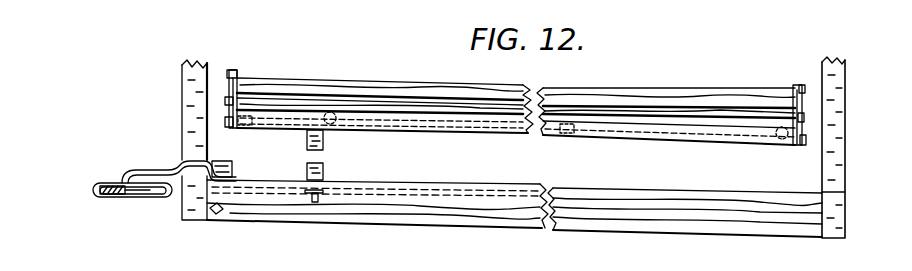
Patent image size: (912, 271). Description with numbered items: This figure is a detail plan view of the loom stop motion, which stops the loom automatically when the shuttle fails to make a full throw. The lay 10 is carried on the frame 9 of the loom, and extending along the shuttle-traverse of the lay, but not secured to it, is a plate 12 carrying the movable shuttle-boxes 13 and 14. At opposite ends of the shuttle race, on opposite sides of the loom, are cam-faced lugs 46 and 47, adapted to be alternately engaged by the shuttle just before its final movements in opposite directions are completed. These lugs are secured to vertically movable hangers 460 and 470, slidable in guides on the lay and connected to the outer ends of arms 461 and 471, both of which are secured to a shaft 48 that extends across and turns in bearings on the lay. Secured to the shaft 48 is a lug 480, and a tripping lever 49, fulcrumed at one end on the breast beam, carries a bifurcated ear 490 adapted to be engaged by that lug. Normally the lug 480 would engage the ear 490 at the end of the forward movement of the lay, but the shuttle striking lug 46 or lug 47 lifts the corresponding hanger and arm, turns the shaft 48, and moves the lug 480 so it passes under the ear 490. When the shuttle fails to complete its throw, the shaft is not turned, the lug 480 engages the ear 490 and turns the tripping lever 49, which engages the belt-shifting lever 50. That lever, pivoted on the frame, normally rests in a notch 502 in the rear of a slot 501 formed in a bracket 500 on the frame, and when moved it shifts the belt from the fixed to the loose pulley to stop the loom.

The frame 9 is at (182, 88).
The lay 10 is at (394, 87).
The plate 12 is at (564, 110).
The shuttle-box 13 is at (296, 103).
The shuttle-box 14 is at (718, 113).
The cam-faced lug 46 is at (229, 100).
The hanger 460 is at (238, 73).
The arm 461 is at (227, 112).
The cam-faced lug 47 is at (804, 118).
The hanger 470 is at (800, 85).
The arm 471 is at (804, 130).
The shaft 48 is at (537, 140).
The lug 480 is at (324, 141).
The ear 490 is at (324, 168).
The tripping lever 49 is at (156, 172).
The belt-shifting lever 50 is at (112, 192).
The bracket 500 is at (98, 184).
The slot 501 is at (162, 197).
The notch 502 is at (128, 193).